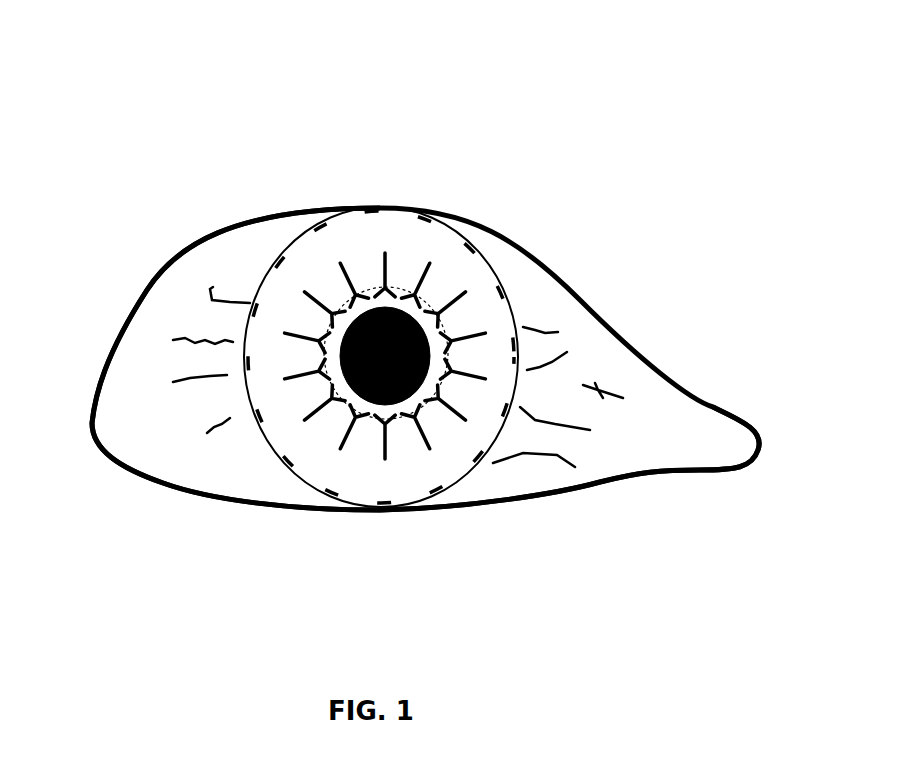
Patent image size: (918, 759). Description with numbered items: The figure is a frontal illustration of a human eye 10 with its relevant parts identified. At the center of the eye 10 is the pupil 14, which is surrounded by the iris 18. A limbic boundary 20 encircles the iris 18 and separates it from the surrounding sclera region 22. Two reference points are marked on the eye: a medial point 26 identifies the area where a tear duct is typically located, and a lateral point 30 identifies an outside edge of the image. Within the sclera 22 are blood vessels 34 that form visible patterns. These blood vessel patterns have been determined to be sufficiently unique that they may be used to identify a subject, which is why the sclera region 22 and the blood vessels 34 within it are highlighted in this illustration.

The eye 10 is at (367, 85).
The pupil 14 is at (375, 300).
The iris 18 is at (402, 462).
The limbic boundary 20 is at (485, 233).
The sclera region 22 is at (180, 438).
The medial point 26 is at (755, 462).
The lateral point 30 is at (88, 427).
The blood vessels 34 is at (563, 490).